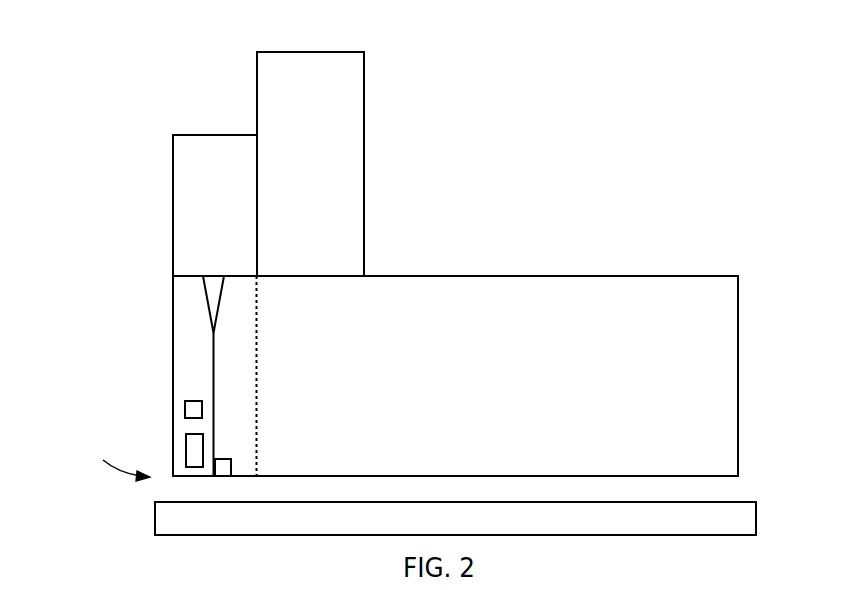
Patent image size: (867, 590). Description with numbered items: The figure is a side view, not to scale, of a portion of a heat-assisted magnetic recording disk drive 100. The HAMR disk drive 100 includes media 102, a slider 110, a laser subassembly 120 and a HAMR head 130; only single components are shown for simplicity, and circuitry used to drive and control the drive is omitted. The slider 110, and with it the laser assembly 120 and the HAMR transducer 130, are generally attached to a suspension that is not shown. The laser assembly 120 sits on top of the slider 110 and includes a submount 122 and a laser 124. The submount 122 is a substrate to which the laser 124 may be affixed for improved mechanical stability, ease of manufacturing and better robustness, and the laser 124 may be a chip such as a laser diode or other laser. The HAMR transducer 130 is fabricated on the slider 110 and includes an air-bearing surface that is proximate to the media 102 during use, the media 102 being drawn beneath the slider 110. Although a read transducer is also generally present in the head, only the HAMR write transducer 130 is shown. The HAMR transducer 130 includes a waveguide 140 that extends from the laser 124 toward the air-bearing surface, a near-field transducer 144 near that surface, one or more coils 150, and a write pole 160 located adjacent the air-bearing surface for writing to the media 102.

The HAMR disk drive 100 is at (461, 30).
The media 102 is at (155, 532).
The slider 110 is at (739, 342).
The laser subassembly 120 is at (82, 185).
The submount 122 is at (364, 142).
The laser 124 is at (173, 162).
The HAMR head 130 is at (257, 302).
The waveguide 140 is at (213, 370).
The near-field transducer 144 is at (228, 477).
The coil 150 is at (185, 401).
The write pole 160 is at (186, 437).